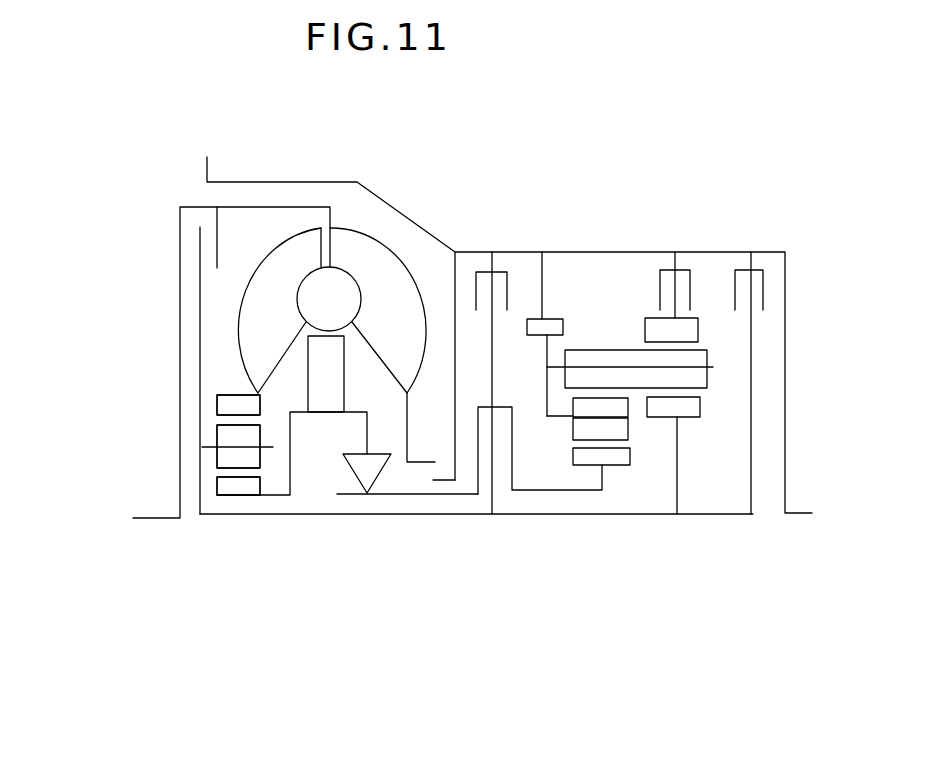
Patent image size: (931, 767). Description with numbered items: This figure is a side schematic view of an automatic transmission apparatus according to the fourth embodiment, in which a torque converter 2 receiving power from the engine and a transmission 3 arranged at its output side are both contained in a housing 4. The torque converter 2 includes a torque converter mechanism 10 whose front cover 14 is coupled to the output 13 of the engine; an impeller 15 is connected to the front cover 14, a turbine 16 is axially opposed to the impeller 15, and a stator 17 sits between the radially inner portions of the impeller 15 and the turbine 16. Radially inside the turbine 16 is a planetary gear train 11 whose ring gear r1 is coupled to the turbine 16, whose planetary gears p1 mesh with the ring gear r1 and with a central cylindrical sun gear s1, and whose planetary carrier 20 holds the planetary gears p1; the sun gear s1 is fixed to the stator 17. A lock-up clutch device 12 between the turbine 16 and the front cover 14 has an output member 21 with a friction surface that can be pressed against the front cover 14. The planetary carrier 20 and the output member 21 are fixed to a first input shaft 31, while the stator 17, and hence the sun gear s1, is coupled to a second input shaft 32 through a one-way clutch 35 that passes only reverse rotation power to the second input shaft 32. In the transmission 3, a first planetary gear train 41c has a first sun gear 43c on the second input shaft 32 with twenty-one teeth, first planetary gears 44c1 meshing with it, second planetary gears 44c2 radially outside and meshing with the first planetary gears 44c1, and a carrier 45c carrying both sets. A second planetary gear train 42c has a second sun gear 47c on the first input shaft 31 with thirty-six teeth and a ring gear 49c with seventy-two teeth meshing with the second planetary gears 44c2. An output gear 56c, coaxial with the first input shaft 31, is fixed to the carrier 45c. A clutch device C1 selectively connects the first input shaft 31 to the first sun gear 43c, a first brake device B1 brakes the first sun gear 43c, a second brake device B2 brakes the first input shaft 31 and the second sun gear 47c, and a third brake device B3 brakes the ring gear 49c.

The torque converter 2 is at (413, 192).
The transmission 3 is at (688, 233).
The housing 4 is at (365, 180).
The torque converter mechanism 10 is at (407, 255).
The planetary gear train 11 is at (237, 504).
The lock-up clutch device 12 is at (189, 235).
The output of the engine 13 is at (157, 515).
The front cover 14 is at (180, 217).
The impeller 15 is at (380, 339).
The turbine 16 is at (276, 339).
The stator 17 is at (329, 299).
The planetary carrier 20 is at (200, 455).
The output member 21 is at (200, 402).
The first input shaft 31 is at (355, 498).
The second input shaft 32 is at (397, 493).
The one-way clutch 35 is at (360, 463).
The ring gear r1 is at (245, 403).
The planetary gears p1 is at (240, 458).
The sun gear s1 is at (218, 495).
The clutch device C1 is at (492, 492).
The first brake device B1 is at (508, 270).
The second brake device B2 is at (762, 282).
The third brake device B3 is at (692, 273).
The first planetary gear train 41c is at (570, 454).
The second planetary gear train 42c is at (666, 433).
The first sun gear 43c is at (622, 458).
The first planetary gears 44c1 is at (590, 407).
The second planetary gears 44c2 is at (572, 355).
The carrier 45c is at (545, 420).
The second sun gear 47c is at (690, 412).
The ring gear 49c is at (687, 330).
The output gear 56c is at (542, 300).